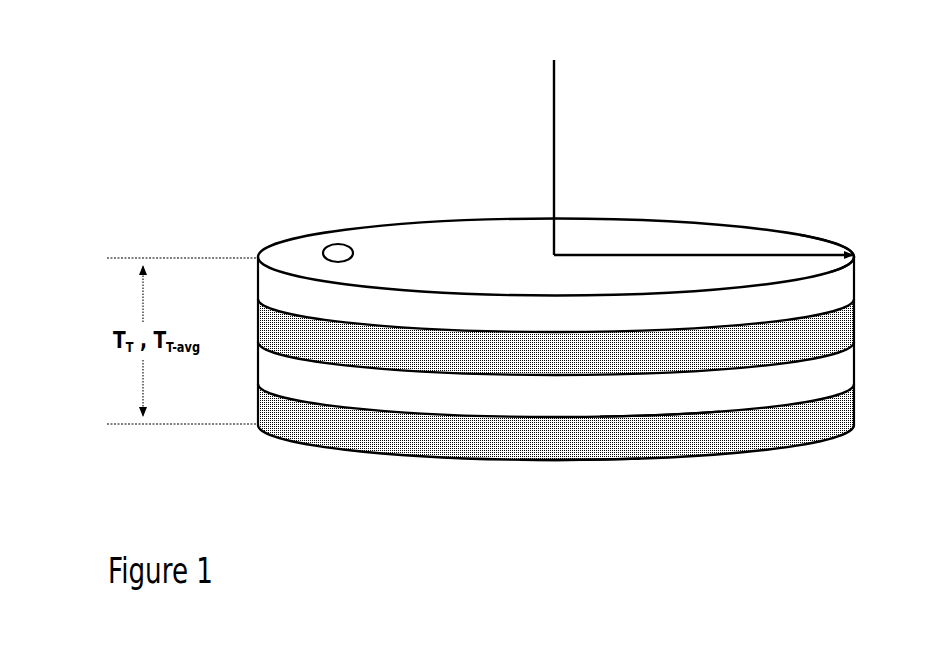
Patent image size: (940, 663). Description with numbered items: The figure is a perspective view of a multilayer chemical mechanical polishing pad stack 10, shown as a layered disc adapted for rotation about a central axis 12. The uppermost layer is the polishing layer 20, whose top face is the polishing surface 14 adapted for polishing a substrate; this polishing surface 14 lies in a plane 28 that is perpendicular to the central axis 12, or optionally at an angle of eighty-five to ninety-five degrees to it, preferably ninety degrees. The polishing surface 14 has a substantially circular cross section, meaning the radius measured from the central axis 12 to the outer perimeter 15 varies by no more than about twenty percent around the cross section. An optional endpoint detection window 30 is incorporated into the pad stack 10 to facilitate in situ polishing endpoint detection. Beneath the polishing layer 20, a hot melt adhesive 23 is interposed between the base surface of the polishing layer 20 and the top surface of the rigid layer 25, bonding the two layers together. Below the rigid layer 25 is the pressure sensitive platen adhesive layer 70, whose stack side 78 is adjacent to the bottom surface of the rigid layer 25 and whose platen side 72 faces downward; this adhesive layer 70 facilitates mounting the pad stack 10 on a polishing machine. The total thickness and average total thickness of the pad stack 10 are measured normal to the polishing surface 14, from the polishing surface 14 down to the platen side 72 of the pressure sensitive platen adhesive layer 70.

The multilayer chemical mechanical polishing pad stack 10 is at (276, 103).
The central axis 12 is at (560, 100).
The polishing surface 14 is at (400, 242).
The outer perimeter 15 is at (856, 253).
The polishing layer 20 is at (447, 315).
The hot melt adhesive 23 is at (765, 352).
The rigid layer 25 is at (710, 395).
The plane 28 is at (485, 232).
The endpoint detection window 30 is at (333, 249).
The pressure sensitive platen adhesive layer 70 is at (495, 440).
The platen side 72 is at (583, 466).
The stack side 78 is at (655, 415).